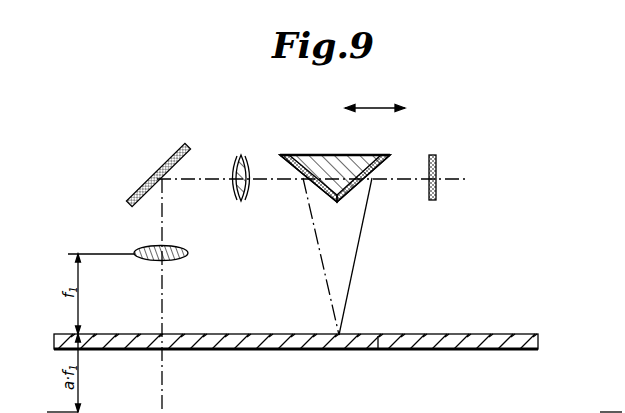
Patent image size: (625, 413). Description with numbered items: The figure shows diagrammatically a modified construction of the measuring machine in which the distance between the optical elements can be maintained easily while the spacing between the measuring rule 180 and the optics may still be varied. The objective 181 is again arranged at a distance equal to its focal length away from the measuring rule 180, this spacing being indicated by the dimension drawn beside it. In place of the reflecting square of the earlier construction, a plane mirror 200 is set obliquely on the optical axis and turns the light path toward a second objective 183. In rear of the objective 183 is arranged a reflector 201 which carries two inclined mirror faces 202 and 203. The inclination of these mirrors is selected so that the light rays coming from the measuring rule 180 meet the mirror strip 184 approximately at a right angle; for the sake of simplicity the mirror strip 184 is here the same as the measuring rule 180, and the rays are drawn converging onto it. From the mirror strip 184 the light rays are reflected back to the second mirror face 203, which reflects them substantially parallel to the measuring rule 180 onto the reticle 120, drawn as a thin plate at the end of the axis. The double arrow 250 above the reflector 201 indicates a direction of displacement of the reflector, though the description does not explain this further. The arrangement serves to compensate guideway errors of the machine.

The reticle 120 is at (437, 163).
The measuring rule 180 is at (294, 345).
The objective 181 is at (150, 260).
The objective 183 is at (240, 201).
The mirror strip 184 is at (378, 348).
The plane mirror 200 is at (152, 180).
The reflector 201 is at (335, 176).
The mirror face 202 is at (298, 180).
The mirror face 203 is at (360, 186).
The displacement direction 250 is at (382, 108).